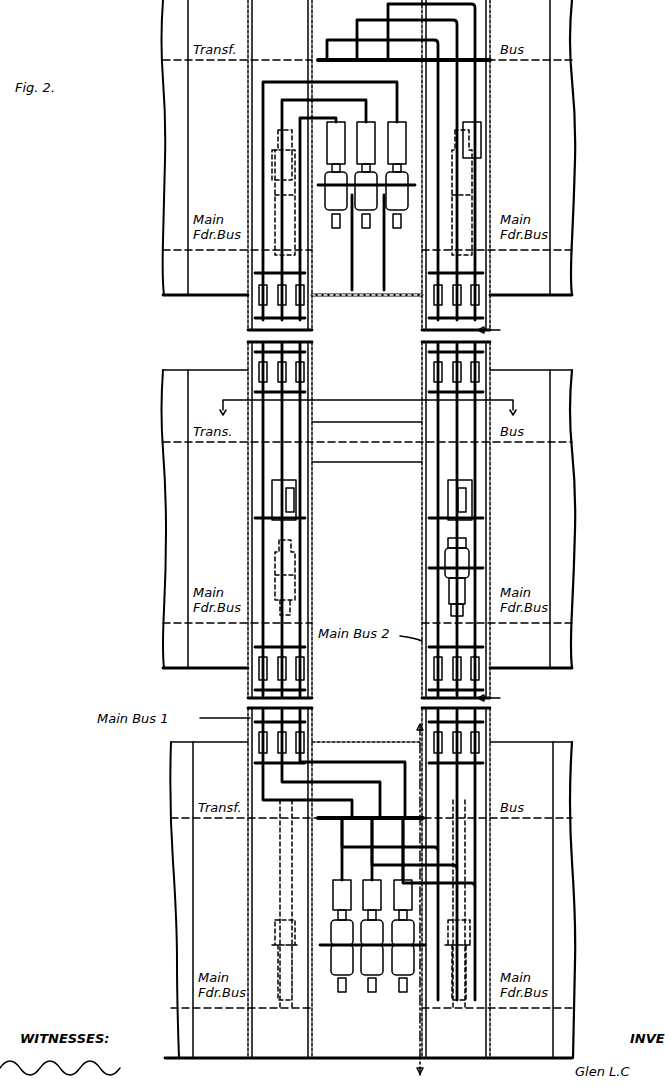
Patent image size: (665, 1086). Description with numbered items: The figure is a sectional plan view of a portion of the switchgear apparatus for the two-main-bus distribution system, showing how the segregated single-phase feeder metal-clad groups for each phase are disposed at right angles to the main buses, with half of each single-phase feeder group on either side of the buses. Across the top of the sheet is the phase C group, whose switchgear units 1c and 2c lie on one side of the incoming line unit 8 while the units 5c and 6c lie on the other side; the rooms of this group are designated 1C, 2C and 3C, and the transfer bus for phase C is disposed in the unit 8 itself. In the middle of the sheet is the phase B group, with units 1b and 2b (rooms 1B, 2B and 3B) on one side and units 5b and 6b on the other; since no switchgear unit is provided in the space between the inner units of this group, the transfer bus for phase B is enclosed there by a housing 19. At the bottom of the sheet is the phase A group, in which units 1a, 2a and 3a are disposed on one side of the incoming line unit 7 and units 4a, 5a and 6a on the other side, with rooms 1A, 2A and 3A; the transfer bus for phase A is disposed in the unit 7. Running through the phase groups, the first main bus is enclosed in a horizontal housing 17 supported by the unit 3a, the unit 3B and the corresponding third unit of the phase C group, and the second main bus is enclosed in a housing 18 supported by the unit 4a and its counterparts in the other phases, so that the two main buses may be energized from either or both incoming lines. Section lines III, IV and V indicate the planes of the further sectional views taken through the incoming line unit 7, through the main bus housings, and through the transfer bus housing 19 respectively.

The switchgear unit 1C is at (163, 250).
The switchgear unit 2C is at (572, 250).
The switchgear unit 3C is at (572, 60).
The switchgear unit 1c is at (183, 296).
The switchgear unit 2c is at (231, 296).
The switchgear unit 5c is at (535, 296).
The switchgear unit 6c is at (556, 296).
The incoming line unit 8 is at (364, 298).
The section line IV is at (494, 518).
The section line V is at (367, 415).
The section line III is at (405, 901).
The housing 19 is at (375, 462).
The horizontal housing 17 is at (312, 548).
The housing 18 is at (422, 547).
The switchgear unit 1B is at (164, 623).
The switchgear unit 2B is at (572, 623).
The switchgear unit 3B is at (572, 442).
The switchgear unit 1b is at (186, 669).
The switchgear unit 2b is at (230, 669).
The switchgear unit 5b is at (534, 669).
The switchgear unit 6b is at (555, 669).
The switchgear unit 1A is at (175, 1008).
The switchgear unit 2A is at (572, 1008).
The switchgear unit 3A is at (572, 818).
The switchgear unit 1a is at (190, 1060).
The switchgear unit 2a is at (234, 1060).
The switchgear unit 3a is at (292, 1060).
The incoming line unit 7 is at (350, 1060).
The switchgear unit 4a is at (475, 1060).
The switchgear unit 5a is at (530, 1060).
The switchgear unit 6a is at (554, 1060).